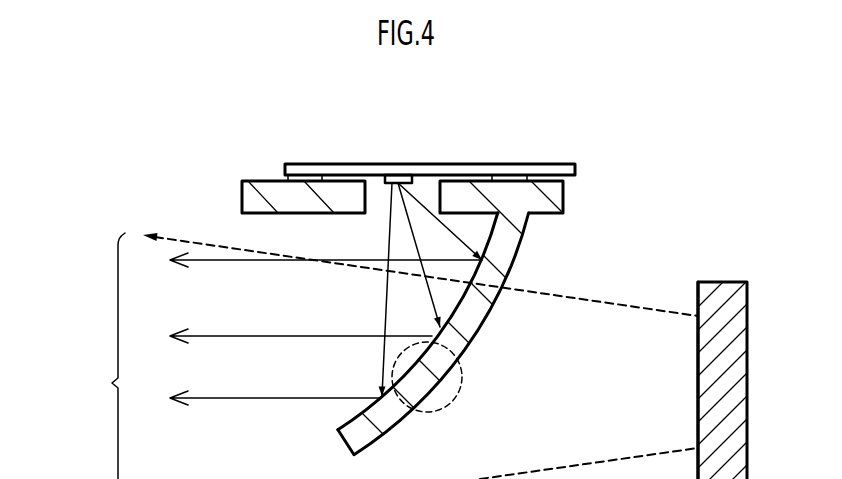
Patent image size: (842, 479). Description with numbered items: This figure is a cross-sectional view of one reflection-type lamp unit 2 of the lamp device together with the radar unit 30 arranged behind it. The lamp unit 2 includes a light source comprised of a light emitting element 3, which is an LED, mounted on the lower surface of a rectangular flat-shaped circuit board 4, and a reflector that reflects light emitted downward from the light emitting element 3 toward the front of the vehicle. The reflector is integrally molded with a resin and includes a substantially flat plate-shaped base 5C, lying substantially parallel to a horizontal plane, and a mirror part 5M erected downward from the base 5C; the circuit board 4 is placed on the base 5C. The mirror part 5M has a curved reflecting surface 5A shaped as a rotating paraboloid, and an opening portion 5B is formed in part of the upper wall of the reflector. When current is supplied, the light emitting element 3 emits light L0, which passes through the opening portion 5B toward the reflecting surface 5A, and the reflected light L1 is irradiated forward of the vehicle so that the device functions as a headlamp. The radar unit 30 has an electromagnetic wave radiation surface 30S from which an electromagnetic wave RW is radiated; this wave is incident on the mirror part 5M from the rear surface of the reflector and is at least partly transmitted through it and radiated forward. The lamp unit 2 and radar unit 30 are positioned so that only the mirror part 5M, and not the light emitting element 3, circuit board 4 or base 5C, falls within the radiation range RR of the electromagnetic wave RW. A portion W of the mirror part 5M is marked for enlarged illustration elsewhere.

The lamp unit 2 is at (252, 129).
The light emitting element 3 is at (385, 180).
The circuit board 4 is at (405, 166).
The reflecting surface 5A is at (362, 412).
The opening portion 5B is at (429, 188).
The base 5C is at (563, 188).
The mirror part 5M is at (520, 247).
The radar unit 30 is at (720, 282).
The electromagnetic wave radiation surface 30S is at (698, 413).
The light L0 is at (461, 229).
The light L1 is at (305, 263).
The radiation range RR is at (228, 331).
The electromagnetic wave RW is at (420, 279).
The portion W is at (461, 387).